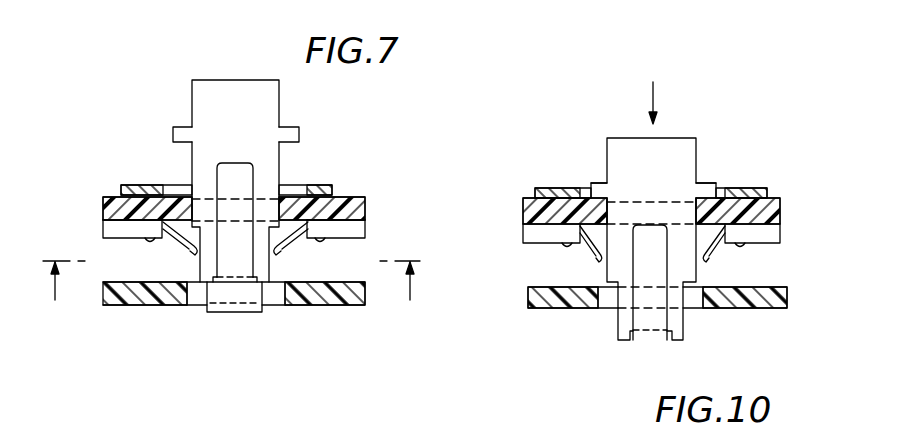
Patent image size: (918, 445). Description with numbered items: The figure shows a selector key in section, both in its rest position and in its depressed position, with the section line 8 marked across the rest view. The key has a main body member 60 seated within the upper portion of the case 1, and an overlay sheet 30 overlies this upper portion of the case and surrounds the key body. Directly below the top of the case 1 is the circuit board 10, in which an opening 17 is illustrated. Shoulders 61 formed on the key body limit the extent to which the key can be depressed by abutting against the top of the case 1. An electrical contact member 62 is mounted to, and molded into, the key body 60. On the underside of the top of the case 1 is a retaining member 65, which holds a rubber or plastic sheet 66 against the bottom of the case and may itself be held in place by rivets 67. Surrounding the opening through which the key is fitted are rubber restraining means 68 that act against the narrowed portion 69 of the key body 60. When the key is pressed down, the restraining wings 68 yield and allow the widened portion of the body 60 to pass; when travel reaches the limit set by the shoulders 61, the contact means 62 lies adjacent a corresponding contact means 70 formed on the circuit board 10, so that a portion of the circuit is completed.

In FIG. 7, the main body member 60 is at (241, 80).
In FIG. 10, the main body member 60 is at (667, 138).
In FIG. 7, the shoulders 61 is at (174, 132).
In FIG. 10, the shoulders 61 is at (703, 185).
In FIG. 7, the electrical contact member 62 is at (233, 174).
In FIG. 10, the electrical contact member 62 is at (645, 314).
In FIG. 7, the overlay sheet 30 is at (313, 186).
In FIG. 10, the overlay sheet 30 is at (745, 188).
In FIG. 7, the case 1 is at (360, 200).
In FIG. 10, the case 1 is at (778, 213).
In FIG. 7, the rubber or plastic sheet 66 is at (366, 215).
In FIG. 7, the retaining member 65 is at (367, 233).
In FIG. 10, the retaining member 65 is at (772, 236).
In FIG. 7, the rivets 67 is at (150, 243).
In FIG. 10, the rivets 67 is at (562, 247).
In FIG. 7, the rubber restraining means 68 is at (188, 250).
In FIG. 10, the rubber restraining means 68 is at (592, 255).
In FIG. 7, the narrowed portion 69 is at (189, 300).
In FIG. 7, the contact means 70 is at (223, 313).
In FIG. 7, the opening 17 is at (272, 300).
In FIG. 10, the opening 17 is at (694, 302).
In FIG. 7, the circuit board 10 is at (342, 303).
In FIG. 10, the circuit board 10 is at (774, 294).
In FIG. 7, the section line 8- 8 is at (231, 296).